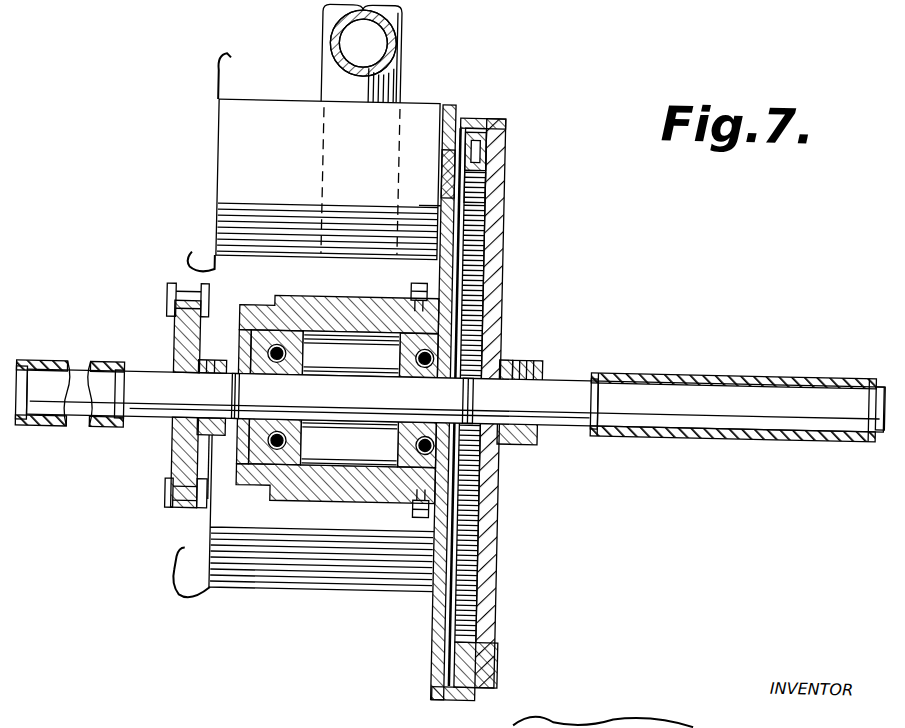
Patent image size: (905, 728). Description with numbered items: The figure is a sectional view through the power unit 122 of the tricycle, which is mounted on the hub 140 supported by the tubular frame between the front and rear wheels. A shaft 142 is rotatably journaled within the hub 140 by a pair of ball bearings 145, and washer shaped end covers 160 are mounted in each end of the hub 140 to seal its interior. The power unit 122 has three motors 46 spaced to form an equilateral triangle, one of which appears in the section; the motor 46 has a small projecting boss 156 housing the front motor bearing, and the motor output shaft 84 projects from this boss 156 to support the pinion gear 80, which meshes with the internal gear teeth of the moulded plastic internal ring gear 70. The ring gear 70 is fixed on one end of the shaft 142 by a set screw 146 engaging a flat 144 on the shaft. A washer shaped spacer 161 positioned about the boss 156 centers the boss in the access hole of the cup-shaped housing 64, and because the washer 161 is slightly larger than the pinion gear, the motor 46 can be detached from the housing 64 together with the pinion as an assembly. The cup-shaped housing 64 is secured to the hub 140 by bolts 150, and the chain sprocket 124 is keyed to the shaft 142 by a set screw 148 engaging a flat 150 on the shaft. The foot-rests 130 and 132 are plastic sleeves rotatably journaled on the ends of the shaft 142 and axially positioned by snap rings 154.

The motor 46 is at (271, 107).
The cup-shaped housing 64 is at (452, 102).
The internal ring gear 70 is at (503, 297).
The pinion gear 80 is at (499, 194).
The motor output shaft 84 is at (498, 169).
The power unit 122 is at (510, 395).
The chain sprocket 124 is at (184, 341).
The foot-rest 130 is at (29, 369).
The foot-rest 132 is at (696, 435).
The hub 140 is at (298, 303).
The shaft 142 is at (326, 428).
The flat 144 is at (540, 393).
The ball bearing 145 is at (321, 361).
The set screw 146 is at (516, 357).
The set screw 148 is at (211, 365).
The bolt 150 is at (408, 286).
The snap ring 154 is at (119, 432).
The projecting boss 156 is at (435, 175).
The end cover 160 is at (234, 473).
The washer shaped spacer 161 is at (436, 206).